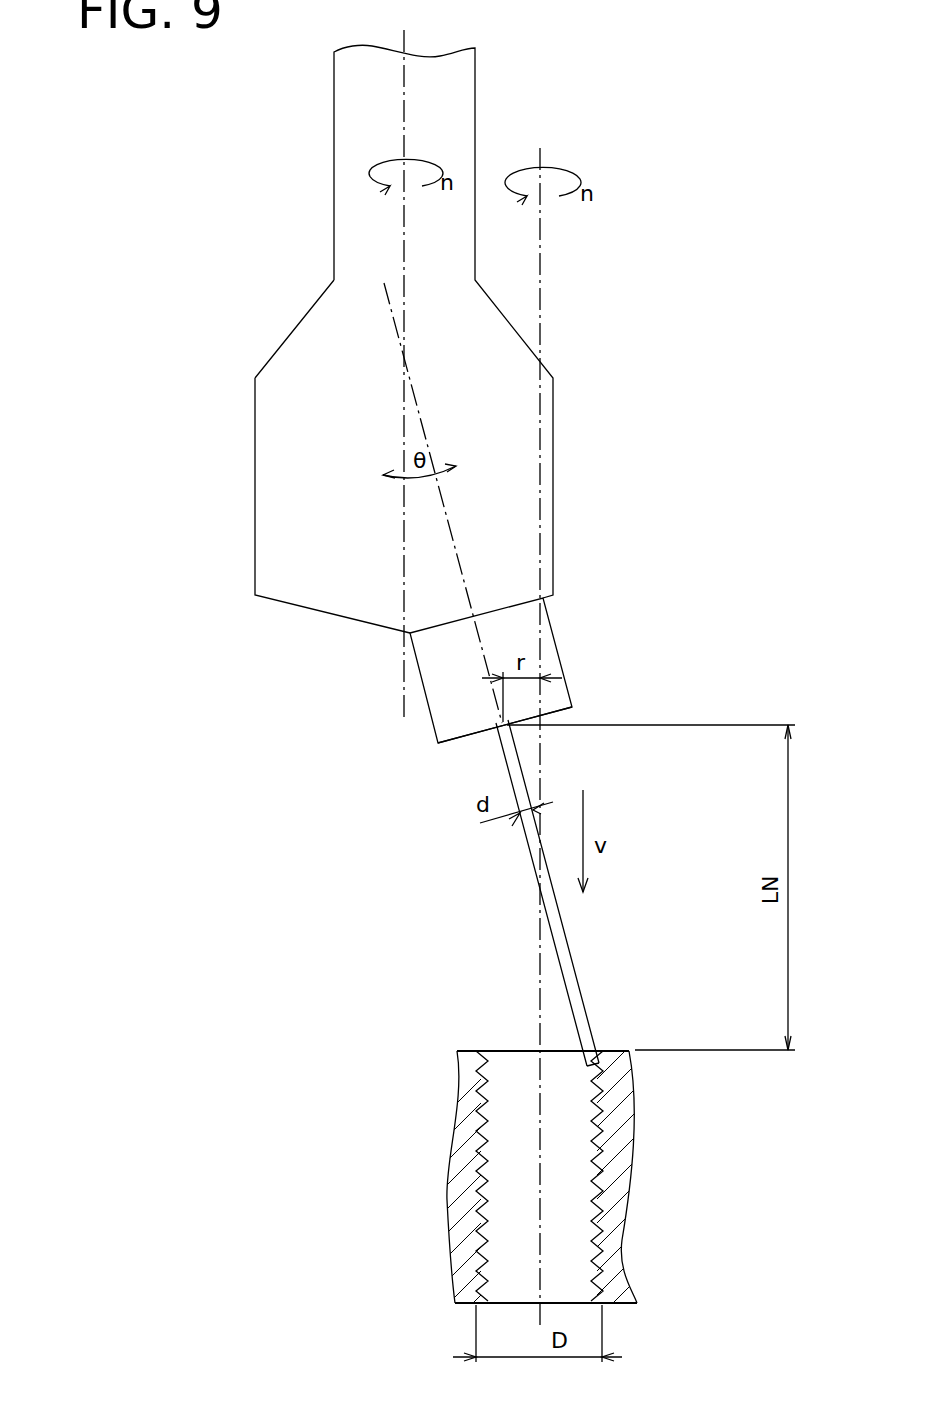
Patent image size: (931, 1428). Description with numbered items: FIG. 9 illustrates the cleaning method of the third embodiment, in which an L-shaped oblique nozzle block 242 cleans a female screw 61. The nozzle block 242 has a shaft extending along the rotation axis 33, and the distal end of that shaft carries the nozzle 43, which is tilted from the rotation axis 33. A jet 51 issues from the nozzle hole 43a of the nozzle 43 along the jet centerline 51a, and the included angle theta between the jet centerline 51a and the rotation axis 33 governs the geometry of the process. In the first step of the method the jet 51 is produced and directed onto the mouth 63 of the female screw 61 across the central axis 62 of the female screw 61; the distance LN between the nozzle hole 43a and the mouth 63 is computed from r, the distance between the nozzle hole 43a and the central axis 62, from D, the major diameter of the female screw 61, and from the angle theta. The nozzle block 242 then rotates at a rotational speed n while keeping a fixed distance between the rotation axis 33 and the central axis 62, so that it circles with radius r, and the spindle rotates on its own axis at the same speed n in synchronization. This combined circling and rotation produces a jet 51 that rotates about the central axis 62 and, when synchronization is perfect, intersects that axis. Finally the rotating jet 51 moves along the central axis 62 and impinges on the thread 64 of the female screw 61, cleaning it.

The nozzle block 242 is at (255, 428).
The rotation axis 33 is at (404, 520).
The jet centerline 51a is at (457, 548).
The nozzle 43 is at (557, 651).
The nozzle hole 43a is at (496, 731).
The jet 51 is at (575, 964).
The central axis 62 is at (540, 955).
The female screw 61 is at (614, 1183).
The mouth 63 is at (470, 1052).
The thread 64 is at (492, 1169).